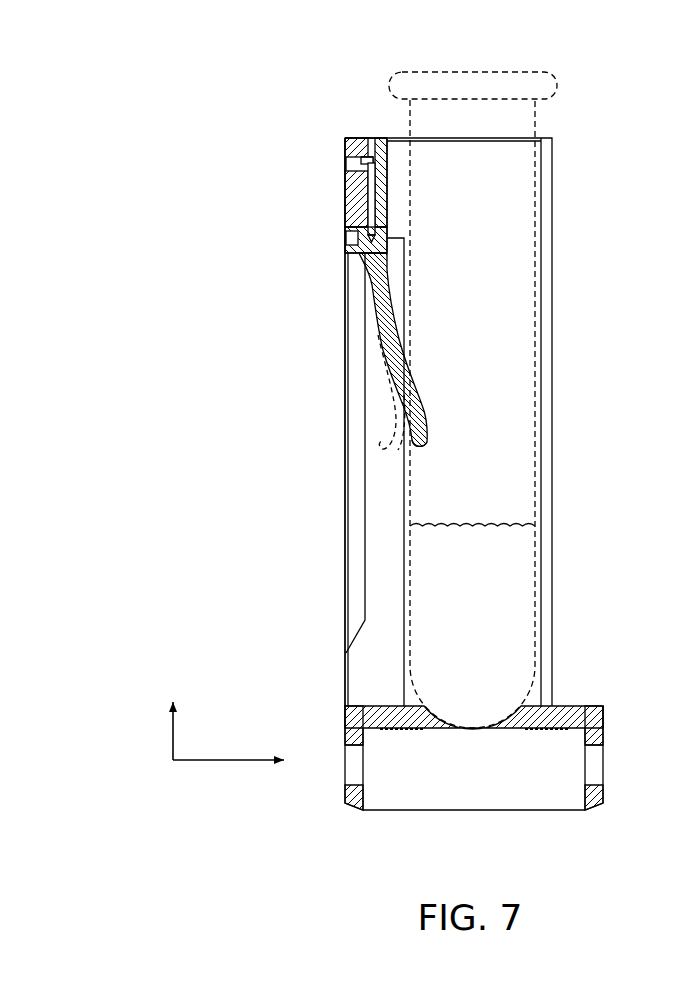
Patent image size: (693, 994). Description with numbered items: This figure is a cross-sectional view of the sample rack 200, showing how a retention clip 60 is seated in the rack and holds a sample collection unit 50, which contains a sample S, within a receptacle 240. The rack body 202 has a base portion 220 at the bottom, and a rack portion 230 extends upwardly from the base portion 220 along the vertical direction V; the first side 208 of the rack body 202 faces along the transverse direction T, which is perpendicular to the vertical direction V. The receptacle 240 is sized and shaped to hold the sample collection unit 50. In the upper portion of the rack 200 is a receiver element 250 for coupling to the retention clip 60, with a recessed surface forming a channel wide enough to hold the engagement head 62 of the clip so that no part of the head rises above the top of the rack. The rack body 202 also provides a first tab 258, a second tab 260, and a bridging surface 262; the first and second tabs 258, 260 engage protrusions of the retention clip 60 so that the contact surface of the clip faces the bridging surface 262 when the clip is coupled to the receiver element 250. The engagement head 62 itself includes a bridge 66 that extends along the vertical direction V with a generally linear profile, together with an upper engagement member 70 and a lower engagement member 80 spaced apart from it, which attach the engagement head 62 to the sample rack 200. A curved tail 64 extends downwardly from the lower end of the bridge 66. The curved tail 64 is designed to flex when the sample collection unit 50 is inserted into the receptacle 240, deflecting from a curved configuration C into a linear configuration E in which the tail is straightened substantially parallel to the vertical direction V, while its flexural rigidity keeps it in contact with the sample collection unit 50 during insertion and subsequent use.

The sample collection unit 50 is at (385, 75).
The sample rack 200 is at (572, 117).
The rack body 202 is at (345, 380).
The first side 208 is at (344, 311).
The rack portion 230 is at (331, 519).
The receptacle 240 is at (379, 651).
The base portion 220 is at (343, 813).
The retention clip 60 is at (332, 145).
The upper engagement member 70 is at (343, 139).
The receiver element 250 is at (344, 178).
The bridge 66 is at (368, 208).
The bridging surface 262 is at (374, 160).
The first tab 258 is at (363, 157).
The engagement head 62 is at (378, 193).
The second tab 260 is at (376, 231).
The lower engagement member 80 is at (370, 252).
The curved tail 64 is at (421, 407).
The linear configuration E is at (382, 453).
The curved configuration C is at (430, 456).
The sample S is at (462, 577).
The vertical direction V is at (172, 743).
The transverse direction T is at (217, 760).